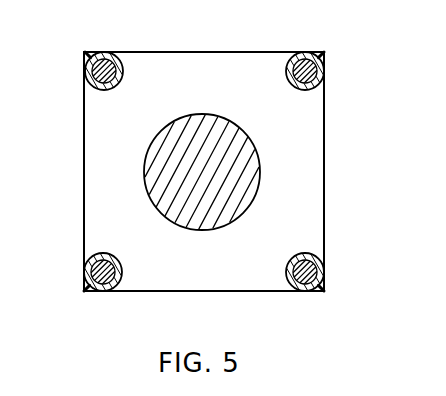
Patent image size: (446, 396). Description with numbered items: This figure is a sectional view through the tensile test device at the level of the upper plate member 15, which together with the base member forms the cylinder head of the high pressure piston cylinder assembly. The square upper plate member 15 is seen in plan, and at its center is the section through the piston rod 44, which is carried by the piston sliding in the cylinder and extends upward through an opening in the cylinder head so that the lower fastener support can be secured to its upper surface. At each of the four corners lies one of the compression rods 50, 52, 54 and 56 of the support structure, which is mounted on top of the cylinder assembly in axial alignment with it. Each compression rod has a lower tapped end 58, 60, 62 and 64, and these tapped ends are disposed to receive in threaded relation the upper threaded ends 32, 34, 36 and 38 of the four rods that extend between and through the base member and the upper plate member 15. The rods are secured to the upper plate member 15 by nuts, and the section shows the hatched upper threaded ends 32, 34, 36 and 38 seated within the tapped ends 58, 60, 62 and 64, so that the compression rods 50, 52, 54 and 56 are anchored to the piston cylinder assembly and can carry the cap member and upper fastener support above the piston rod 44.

The upper plate member 15 is at (325, 134).
The upper portion of rod 32 is at (90, 255).
The upper portion of rod 34 is at (316, 271).
The upper portion of rod 36 is at (323, 78).
The upper portion of rod 38 is at (118, 63).
The piston rod 44 is at (217, 177).
The compression rod 50 is at (75, 277).
The compression rod 52 is at (326, 248).
The compression rod 54 is at (337, 55).
The compression rod 56 is at (124, 42).
The lower tapped end 58 is at (118, 292).
The lower tapped end 60 is at (293, 293).
The lower tapped end 62 is at (294, 54).
The lower tapped end 64 is at (90, 58).